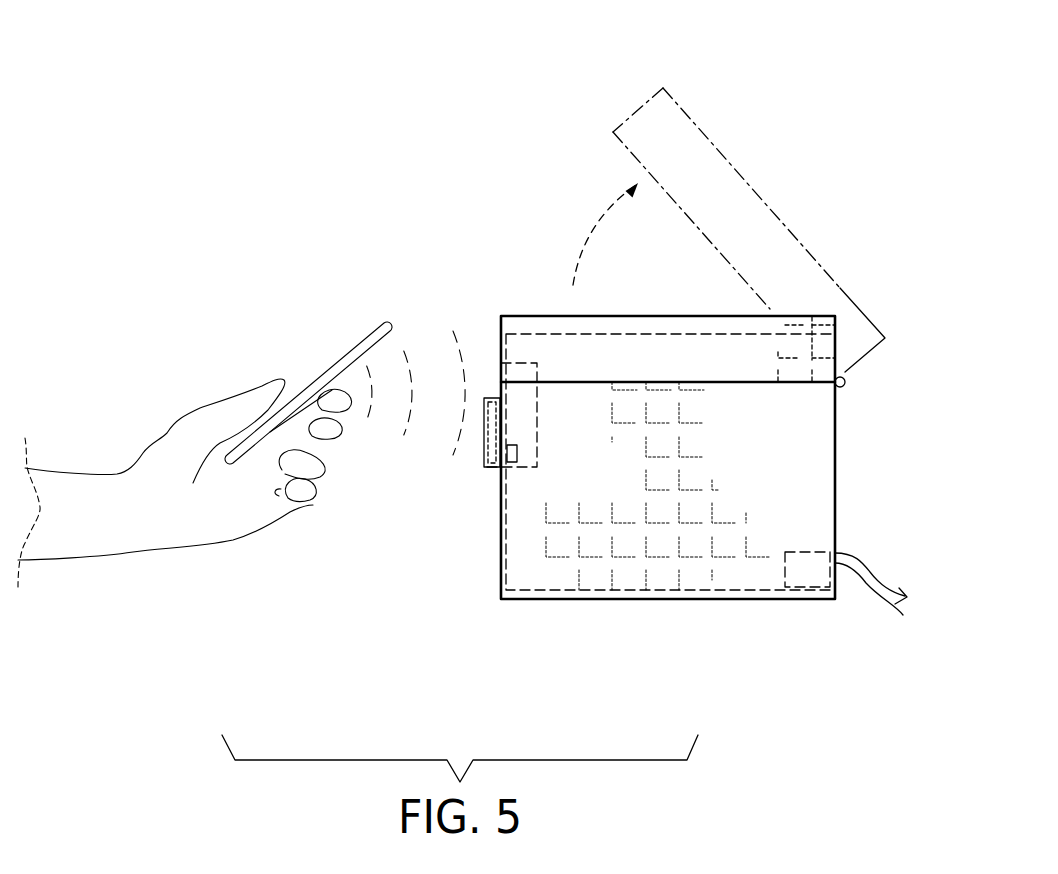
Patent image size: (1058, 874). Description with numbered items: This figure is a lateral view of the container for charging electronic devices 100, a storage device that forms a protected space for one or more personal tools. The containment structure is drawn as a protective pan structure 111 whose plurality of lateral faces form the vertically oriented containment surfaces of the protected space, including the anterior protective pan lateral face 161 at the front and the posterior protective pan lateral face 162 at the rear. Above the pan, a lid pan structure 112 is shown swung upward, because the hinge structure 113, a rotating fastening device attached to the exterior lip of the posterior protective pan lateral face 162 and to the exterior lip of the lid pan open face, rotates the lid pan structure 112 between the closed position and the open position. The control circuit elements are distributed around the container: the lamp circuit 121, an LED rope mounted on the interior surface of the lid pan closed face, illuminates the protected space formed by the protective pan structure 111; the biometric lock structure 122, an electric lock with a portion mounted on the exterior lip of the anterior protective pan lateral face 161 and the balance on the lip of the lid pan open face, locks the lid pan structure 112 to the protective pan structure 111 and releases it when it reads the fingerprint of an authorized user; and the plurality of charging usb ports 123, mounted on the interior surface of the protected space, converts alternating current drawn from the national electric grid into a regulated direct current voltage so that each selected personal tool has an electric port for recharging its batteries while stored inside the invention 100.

The container for charging electronic devices 100 is at (300, 70).
The protective pan structure 111 is at (690, 577).
The lid pan structure 112 is at (836, 345).
The hinge structure 113 is at (848, 383).
The lamp circuit 121 is at (553, 327).
The biometric lock structure 122 is at (482, 456).
The plurality of charging usb ports 123 is at (807, 567).
The anterior protective pan lateral face 161 is at (500, 550).
The posterior protective pan lateral face 162 is at (836, 467).